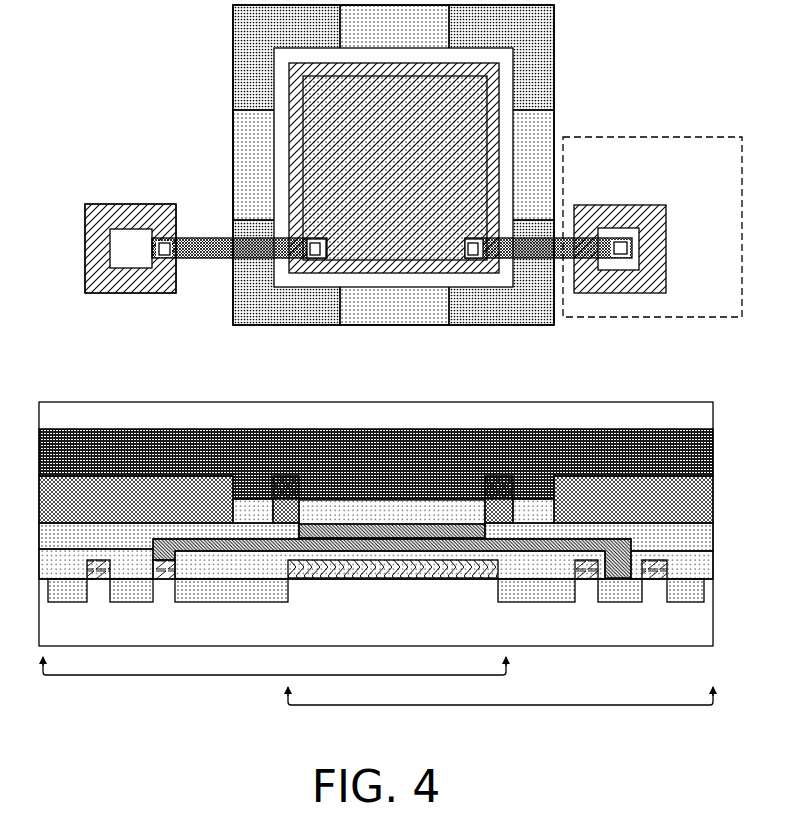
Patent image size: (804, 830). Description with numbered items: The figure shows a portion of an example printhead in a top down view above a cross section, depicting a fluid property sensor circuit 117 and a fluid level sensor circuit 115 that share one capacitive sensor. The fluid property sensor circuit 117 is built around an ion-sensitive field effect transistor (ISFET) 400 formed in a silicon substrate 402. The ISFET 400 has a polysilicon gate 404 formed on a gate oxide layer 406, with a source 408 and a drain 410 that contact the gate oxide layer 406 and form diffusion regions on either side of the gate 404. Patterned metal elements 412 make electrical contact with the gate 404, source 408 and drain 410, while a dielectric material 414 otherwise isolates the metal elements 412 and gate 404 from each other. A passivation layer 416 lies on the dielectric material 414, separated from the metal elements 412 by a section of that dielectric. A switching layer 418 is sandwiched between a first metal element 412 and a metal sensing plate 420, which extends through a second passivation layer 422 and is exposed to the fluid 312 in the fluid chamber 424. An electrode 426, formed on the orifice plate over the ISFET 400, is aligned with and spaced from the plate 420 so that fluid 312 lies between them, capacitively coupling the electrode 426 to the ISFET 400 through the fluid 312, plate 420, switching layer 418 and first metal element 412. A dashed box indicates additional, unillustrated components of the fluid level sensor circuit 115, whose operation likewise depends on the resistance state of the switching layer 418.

The ion-sensitive field effect transistor (ISFET) 400 is at (76, 188).
The gate 404 is at (135, 215).
The gate oxide layer 406 is at (87, 573).
The source 408 is at (130, 290).
The drain 410 is at (117, 255).
The metal elements 412 is at (223, 262).
The dielectric material 414 is at (703, 573).
The passivation layer 416 is at (705, 540).
The switching layer 418 is at (403, 530).
The metal sensing plate 420 is at (382, 154).
The second passivation layer 422 is at (703, 510).
The fluid chamber 424 is at (377, 459).
The electrode 426 is at (660, 410).
The fluid 312 is at (700, 444).
The substrate 402 is at (705, 632).
The fluid level sensor circuit 115 is at (692, 137).
The fluid property sensor circuit 117 is at (185, 676).